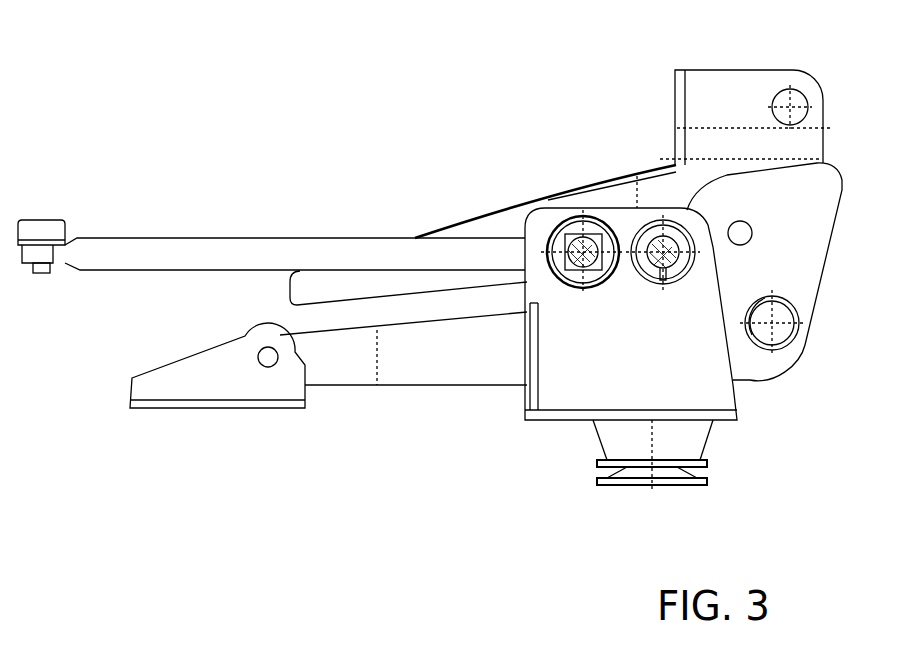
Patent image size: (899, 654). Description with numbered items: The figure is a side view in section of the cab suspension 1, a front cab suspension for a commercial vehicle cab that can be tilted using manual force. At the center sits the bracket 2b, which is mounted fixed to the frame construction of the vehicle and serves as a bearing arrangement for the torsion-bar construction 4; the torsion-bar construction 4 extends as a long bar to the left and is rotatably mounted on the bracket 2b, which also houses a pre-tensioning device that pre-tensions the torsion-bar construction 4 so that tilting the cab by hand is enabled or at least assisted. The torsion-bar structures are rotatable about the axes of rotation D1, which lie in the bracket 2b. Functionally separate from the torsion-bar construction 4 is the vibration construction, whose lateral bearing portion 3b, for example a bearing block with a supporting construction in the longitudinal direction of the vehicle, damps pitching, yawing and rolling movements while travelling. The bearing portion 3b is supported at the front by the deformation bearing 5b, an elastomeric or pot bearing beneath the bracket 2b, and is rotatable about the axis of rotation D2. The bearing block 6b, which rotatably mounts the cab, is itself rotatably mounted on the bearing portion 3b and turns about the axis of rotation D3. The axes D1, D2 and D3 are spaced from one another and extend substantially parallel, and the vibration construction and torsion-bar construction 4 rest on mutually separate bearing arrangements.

The cab suspension 1 is at (266, 90).
The torsion-bar construction 4 is at (263, 245).
The bracket 2b is at (692, 350).
The bearing portion 3b is at (418, 367).
The deformation bearing 5b is at (640, 473).
The bearing block 6b is at (492, 227).
The axis of rotation of torsion-bar construction D1 is at (649, 246).
The axis of rotation of bearing portions D2 is at (277, 363).
The axis of rotation of bearing blocks D3 is at (728, 230).